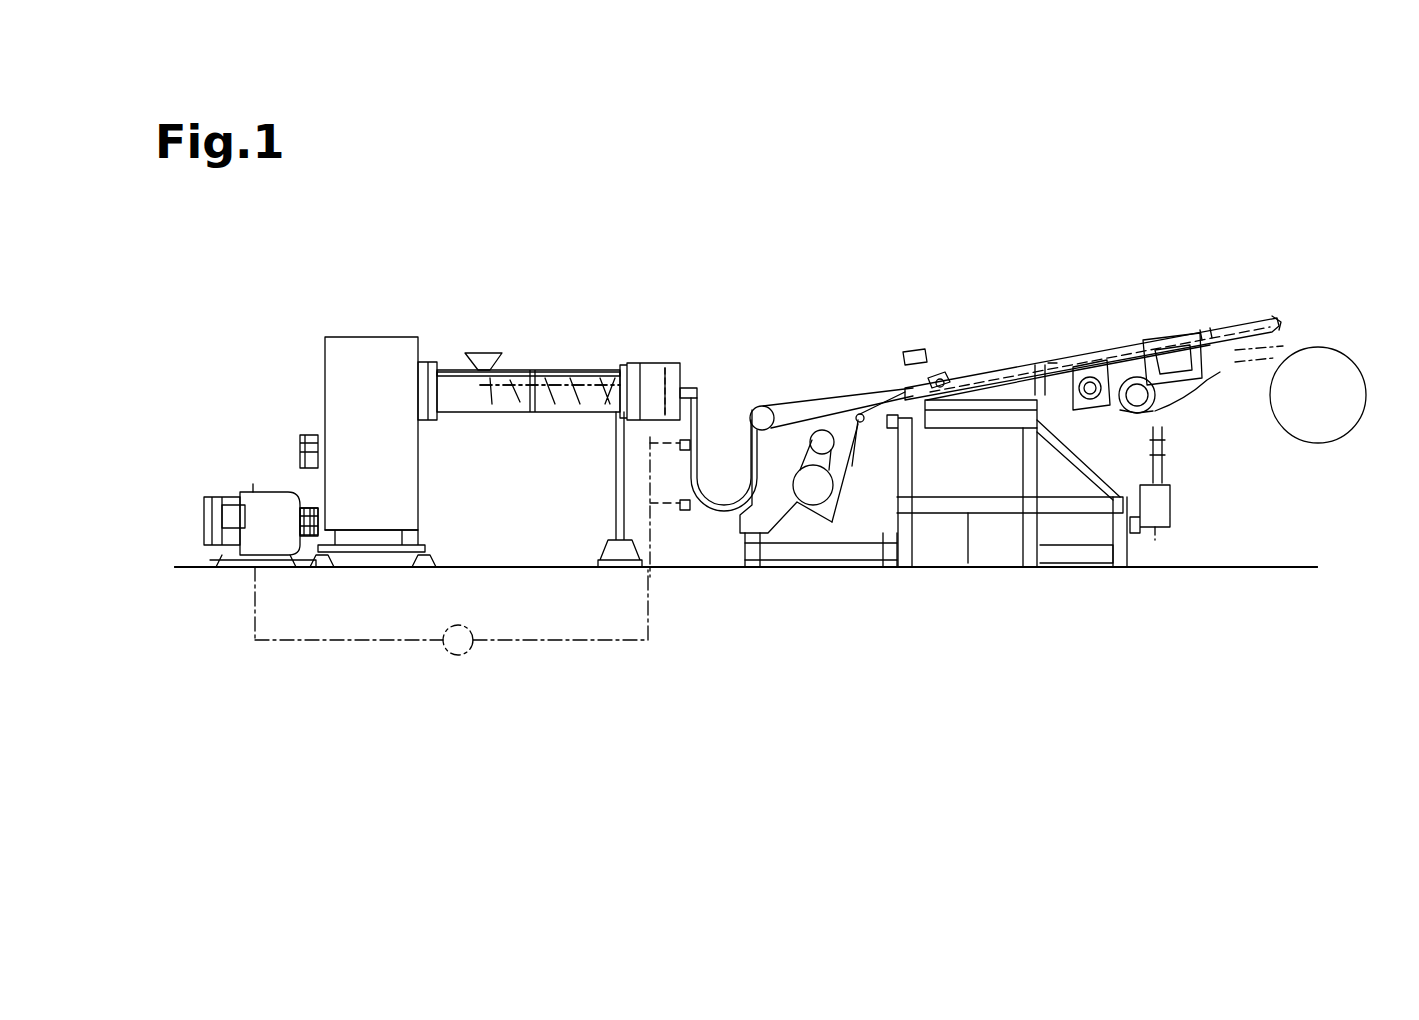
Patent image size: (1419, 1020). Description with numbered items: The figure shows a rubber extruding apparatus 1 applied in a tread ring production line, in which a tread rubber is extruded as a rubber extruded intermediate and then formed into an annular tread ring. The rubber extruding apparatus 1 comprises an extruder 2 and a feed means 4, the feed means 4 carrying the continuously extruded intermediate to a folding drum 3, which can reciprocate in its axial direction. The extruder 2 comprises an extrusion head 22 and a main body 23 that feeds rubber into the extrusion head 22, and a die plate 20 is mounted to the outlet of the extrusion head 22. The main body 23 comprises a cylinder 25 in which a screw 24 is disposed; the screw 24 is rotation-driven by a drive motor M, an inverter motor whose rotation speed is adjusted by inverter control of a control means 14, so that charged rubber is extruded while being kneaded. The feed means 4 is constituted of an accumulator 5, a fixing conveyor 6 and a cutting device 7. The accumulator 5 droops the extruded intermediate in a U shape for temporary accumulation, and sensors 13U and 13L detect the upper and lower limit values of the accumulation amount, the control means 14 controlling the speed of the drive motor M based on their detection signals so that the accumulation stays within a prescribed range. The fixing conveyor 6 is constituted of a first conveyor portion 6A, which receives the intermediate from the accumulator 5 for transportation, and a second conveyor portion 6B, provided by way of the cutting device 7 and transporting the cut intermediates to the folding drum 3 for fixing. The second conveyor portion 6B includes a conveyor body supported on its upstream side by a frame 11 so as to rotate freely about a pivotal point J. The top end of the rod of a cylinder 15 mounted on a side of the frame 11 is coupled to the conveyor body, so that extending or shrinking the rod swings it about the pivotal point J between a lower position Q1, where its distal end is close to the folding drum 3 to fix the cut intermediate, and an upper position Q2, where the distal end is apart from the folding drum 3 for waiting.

The rubber extruding apparatus 1 is at (930, 292).
The extruder 2 is at (498, 357).
The folding drum 3 is at (1335, 442).
The feed means 4 is at (1062, 306).
The accumulator 5 is at (722, 532).
The fixing conveyor 6 is at (933, 562).
The first conveyor portion 6A is at (863, 470).
The second conveyor portion 6B is at (1007, 541).
The cutting device 7 is at (903, 352).
The frame 11 is at (965, 572).
The upper limit sensor 13U is at (680, 445).
The lower limit sensor 13L is at (680, 505).
The control means 14 is at (468, 652).
The cylinder 15 is at (1172, 500).
The die plate 20 is at (672, 365).
The extrusion head 22 is at (643, 333).
The main body 23 is at (502, 318).
The screw 24 is at (555, 372).
The cylinder 25 is at (452, 372).
The drive motor M is at (243, 500).
The pivotal point J is at (942, 352).
The lower position Q1 is at (1263, 373).
The upper position Q2 is at (1272, 296).